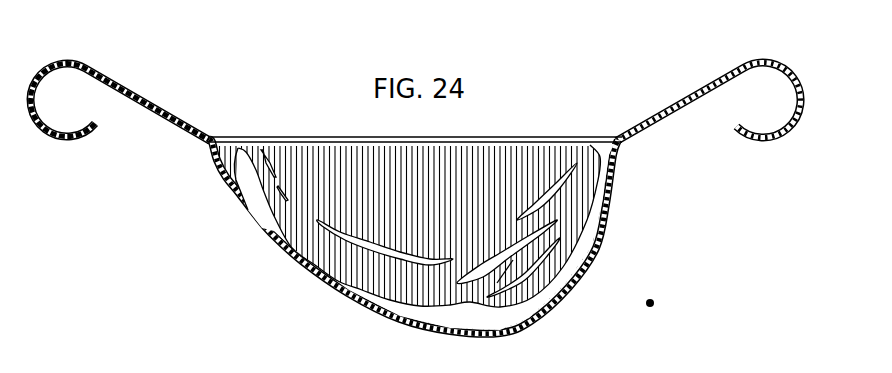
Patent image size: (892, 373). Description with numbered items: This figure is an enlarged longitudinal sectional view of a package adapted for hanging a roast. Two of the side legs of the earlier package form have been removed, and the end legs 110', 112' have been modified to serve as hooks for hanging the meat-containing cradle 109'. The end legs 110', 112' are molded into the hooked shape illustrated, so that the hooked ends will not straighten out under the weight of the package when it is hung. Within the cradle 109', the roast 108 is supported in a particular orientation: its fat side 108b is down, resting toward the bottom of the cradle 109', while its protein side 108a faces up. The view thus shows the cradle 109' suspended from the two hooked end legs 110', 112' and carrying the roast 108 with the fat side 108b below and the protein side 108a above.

The end leg 110' is at (121, 73).
The end leg 112' is at (709, 77).
The meat-containing cradle 109' is at (413, 237).
The roast 108 is at (497, 170).
The protein side 108a is at (332, 152).
The fat side 108b is at (545, 298).